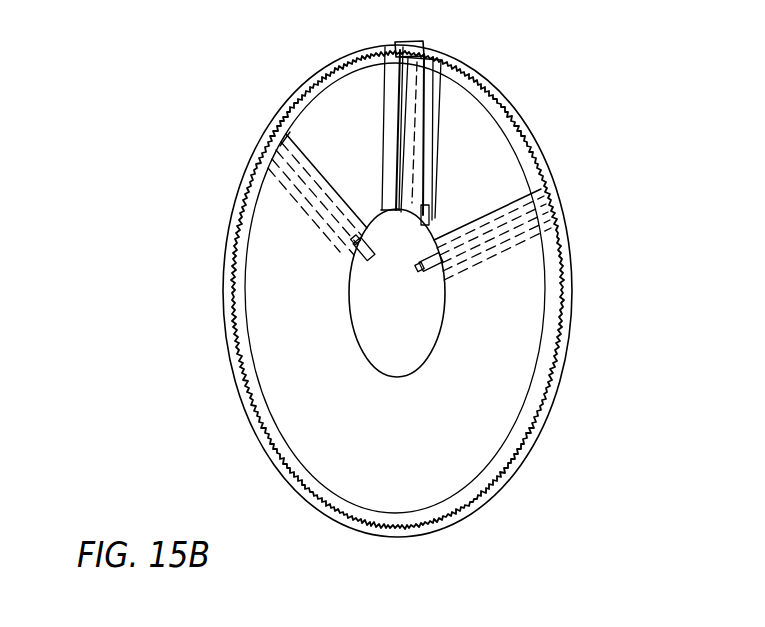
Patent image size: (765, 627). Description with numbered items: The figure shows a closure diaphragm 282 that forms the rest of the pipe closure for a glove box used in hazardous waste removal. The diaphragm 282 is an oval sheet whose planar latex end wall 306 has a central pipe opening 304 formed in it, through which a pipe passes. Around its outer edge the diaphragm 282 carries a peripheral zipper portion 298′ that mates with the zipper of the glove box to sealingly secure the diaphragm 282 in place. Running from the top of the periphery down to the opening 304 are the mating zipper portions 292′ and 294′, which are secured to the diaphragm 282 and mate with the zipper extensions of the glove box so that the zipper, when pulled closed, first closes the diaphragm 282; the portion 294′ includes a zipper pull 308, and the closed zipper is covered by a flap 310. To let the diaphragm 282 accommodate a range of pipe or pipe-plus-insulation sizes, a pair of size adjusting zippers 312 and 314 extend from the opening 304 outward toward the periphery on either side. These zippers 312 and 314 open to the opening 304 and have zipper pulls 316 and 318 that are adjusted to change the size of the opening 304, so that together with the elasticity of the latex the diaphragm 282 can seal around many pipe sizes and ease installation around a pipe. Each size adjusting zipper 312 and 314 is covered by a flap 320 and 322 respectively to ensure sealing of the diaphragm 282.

The closure diaphragm 282 is at (216, 396).
The peripheral zipper portion 298′ is at (233, 312).
The planar latex end wall 306 is at (425, 434).
The central pipe opening 304 is at (402, 376).
The mating zipper portion 292′ is at (397, 160).
The mating zipper portion 294′ is at (427, 160).
The flap 310 is at (412, 52).
The flap 320 is at (297, 148).
The size adjusting zipper 312 is at (294, 214).
The zipper pull 308 is at (437, 237).
The size adjusting zipper 314 is at (504, 270).
The flap 322 is at (532, 194).
The zipper pull 316 is at (372, 260).
The zipper pull 318 is at (430, 272).